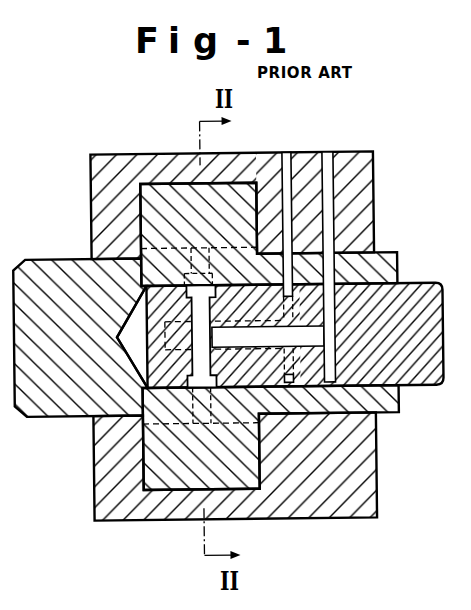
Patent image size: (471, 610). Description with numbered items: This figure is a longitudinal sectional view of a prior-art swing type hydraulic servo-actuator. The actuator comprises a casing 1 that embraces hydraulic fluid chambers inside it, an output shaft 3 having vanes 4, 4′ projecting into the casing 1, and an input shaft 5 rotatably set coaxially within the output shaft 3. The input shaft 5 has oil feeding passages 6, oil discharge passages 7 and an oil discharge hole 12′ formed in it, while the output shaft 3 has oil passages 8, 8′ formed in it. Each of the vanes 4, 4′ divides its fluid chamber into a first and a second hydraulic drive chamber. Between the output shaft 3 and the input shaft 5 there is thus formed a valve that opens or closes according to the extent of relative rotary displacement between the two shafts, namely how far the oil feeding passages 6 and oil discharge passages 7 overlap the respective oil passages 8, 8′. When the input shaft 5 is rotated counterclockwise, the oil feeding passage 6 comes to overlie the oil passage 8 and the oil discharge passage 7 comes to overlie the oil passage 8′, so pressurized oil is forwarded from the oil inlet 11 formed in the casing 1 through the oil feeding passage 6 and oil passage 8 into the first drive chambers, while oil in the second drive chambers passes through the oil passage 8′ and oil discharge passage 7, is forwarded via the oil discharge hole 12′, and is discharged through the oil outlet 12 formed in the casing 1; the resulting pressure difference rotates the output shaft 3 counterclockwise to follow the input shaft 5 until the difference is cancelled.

The casing 1 is at (96, 146).
The output shaft 3 is at (47, 292).
The vane 4 is at (190, 190).
The vane 4′ is at (238, 475).
The input shaft 5 is at (422, 297).
The oil feeding passage 6 is at (140, 327).
The oil discharge passage 7 is at (183, 390).
The oil passage 8 is at (182, 275).
The oil passage 8′ is at (213, 398).
The oil inlet 11 is at (285, 152).
The oil outlet 12 is at (330, 152).
The oil discharge hole 12′ is at (247, 337).